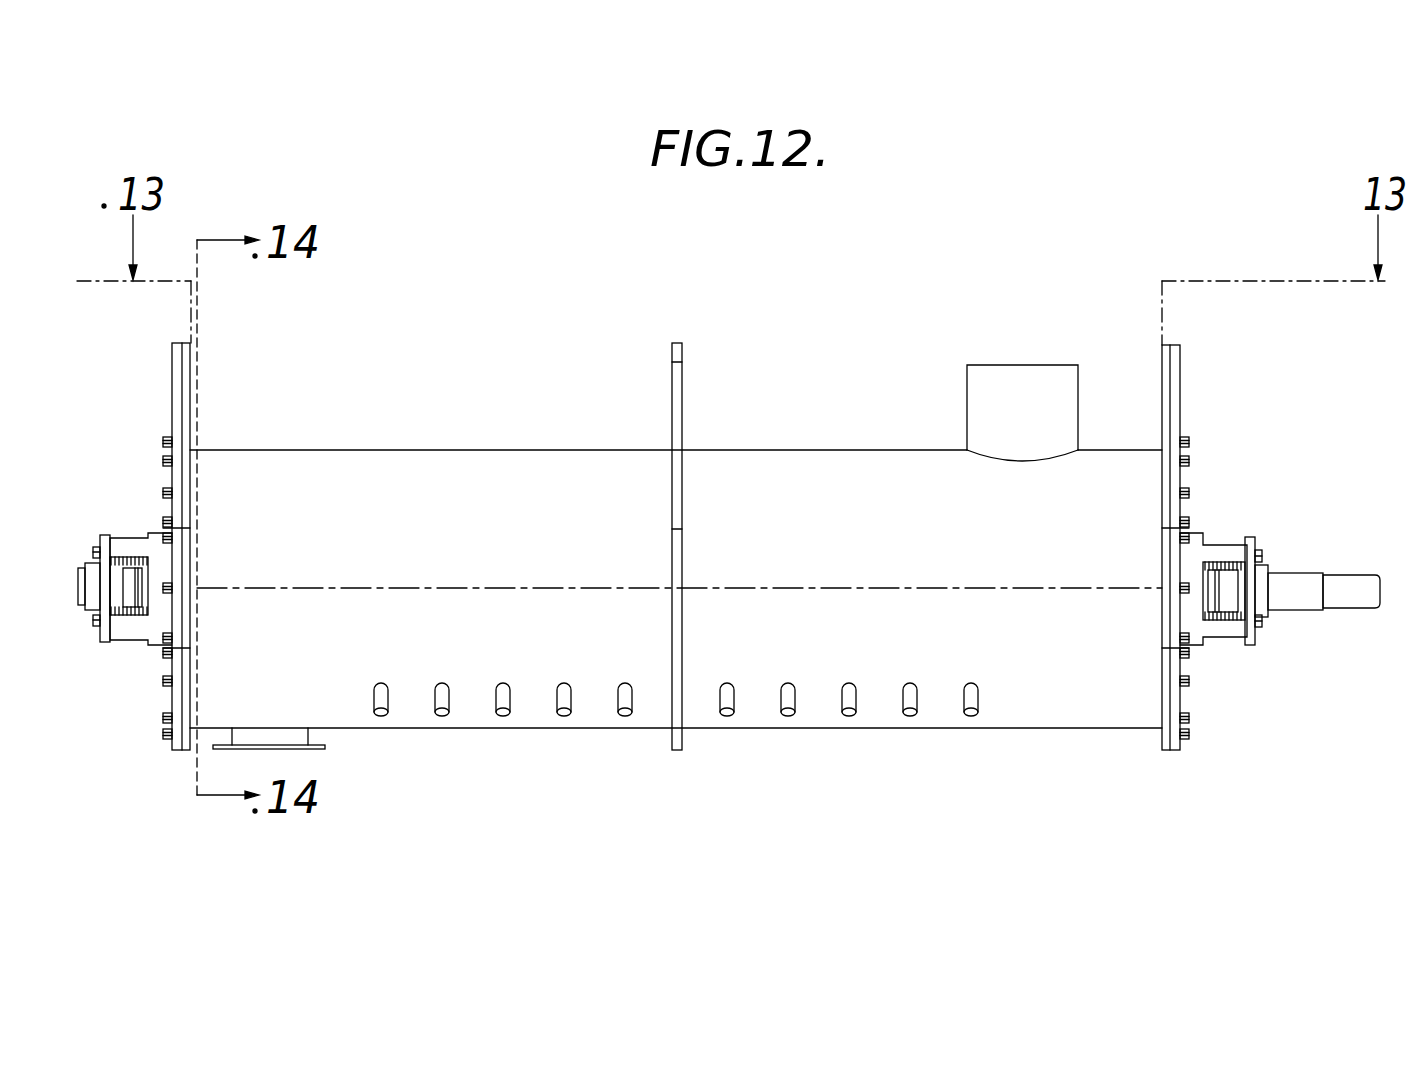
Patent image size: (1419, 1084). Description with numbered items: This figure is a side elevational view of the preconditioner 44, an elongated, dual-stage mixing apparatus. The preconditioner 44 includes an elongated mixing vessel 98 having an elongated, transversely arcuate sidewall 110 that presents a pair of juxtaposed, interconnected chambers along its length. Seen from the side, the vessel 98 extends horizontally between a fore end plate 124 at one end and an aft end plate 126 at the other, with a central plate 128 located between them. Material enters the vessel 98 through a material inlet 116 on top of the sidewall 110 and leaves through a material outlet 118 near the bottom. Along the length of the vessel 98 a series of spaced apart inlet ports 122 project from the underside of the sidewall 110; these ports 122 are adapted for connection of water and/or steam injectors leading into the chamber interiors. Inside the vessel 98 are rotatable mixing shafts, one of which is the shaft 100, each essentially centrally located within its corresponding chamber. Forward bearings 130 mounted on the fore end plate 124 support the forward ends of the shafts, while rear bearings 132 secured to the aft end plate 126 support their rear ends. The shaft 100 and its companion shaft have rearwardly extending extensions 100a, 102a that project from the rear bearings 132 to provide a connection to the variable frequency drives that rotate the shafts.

The preconditioner 44 is at (872, 302).
The mixing vessel 98 is at (866, 440).
The mixing shaft 100 is at (78, 596).
The shaft extension 100a is at (1293, 578).
The shaft extension 102a is at (1352, 600).
The sidewall 110 is at (432, 462).
The material inlet 116 is at (1025, 376).
The material outlet 118 is at (300, 738).
The inlet ports 122 is at (720, 714).
The fore end plate 124 is at (174, 372).
The aft end plate 126 is at (1178, 375).
The central plate 128 is at (678, 385).
The forward bearings 130 is at (137, 543).
The rear bearings 132 is at (1215, 550).